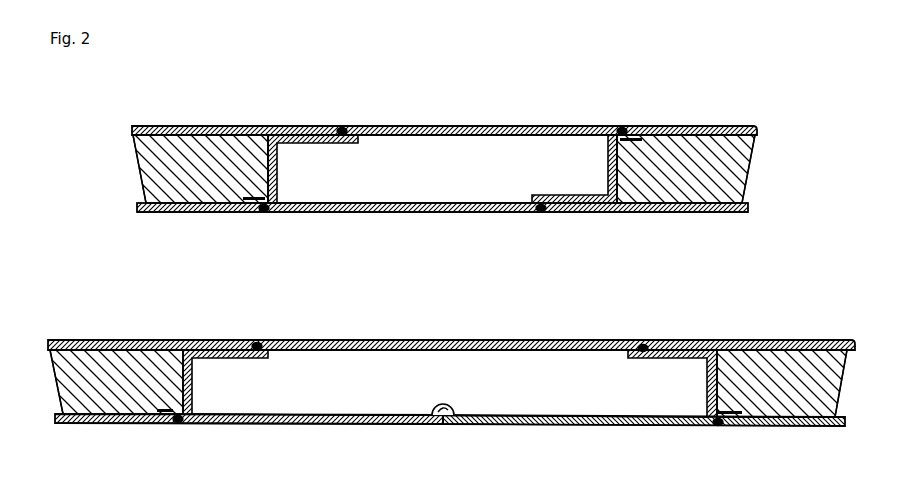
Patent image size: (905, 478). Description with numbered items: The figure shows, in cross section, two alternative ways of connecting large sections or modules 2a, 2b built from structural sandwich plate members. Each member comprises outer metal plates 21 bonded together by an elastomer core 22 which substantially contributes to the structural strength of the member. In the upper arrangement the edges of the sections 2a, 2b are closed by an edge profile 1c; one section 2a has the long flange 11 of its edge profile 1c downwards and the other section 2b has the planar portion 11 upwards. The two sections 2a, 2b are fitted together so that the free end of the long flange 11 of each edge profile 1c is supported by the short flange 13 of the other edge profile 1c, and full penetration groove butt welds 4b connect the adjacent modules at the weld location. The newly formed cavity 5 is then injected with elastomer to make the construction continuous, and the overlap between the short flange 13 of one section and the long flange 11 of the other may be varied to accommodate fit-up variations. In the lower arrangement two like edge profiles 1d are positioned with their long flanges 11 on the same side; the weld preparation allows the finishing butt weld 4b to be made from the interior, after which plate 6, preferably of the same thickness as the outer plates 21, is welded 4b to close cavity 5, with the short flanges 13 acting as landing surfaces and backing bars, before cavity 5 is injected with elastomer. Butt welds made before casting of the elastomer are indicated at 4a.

In FIG. 2A, the edge profile 1c is at (476, 127).
In FIG. 2B, the edge profile 1d is at (272, 425).
In FIG. 2A, the section 2a is at (103, 152).
In FIG. 2B, the section 2a is at (98, 320).
In FIG. 2A, the section 2b is at (784, 160).
In FIG. 2B, the section 2b is at (744, 310).
In FIG. 2A, the butt weld 4a is at (622, 128).
In FIG. 2B, the butt weld 4a is at (179, 425).
In FIG. 2A, the finishing butt weld 4b is at (343, 130).
In FIG. 2B, the finishing butt weld 4b is at (256, 343).
In FIG. 2A, the cavity 5 is at (457, 177).
In FIG. 2B, the cavity 5 is at (492, 396).
In FIG. 2B, the plate 6 is at (420, 340).
In FIG. 2A, the long flange 11 is at (543, 127).
In FIG. 2B, the long flange 11 is at (329, 415).
In FIG. 2A, the short flange 13 is at (338, 146).
In FIG. 2B, the short flange 13 is at (248, 358).
In FIG. 2A, the outer metal plate 21 is at (251, 126).
In FIG. 2B, the outer metal plate 21 is at (169, 341).
In FIG. 2A, the elastomer core 22 is at (203, 175).
In FIG. 2B, the elastomer core 22 is at (123, 394).